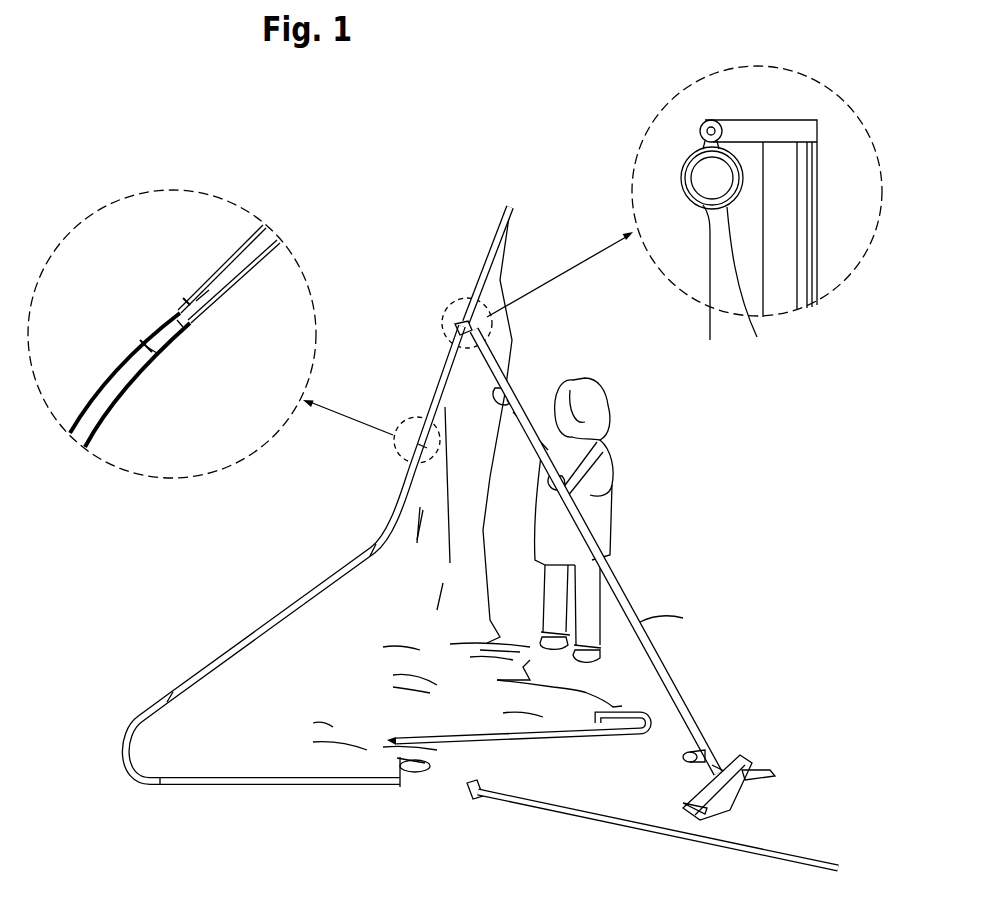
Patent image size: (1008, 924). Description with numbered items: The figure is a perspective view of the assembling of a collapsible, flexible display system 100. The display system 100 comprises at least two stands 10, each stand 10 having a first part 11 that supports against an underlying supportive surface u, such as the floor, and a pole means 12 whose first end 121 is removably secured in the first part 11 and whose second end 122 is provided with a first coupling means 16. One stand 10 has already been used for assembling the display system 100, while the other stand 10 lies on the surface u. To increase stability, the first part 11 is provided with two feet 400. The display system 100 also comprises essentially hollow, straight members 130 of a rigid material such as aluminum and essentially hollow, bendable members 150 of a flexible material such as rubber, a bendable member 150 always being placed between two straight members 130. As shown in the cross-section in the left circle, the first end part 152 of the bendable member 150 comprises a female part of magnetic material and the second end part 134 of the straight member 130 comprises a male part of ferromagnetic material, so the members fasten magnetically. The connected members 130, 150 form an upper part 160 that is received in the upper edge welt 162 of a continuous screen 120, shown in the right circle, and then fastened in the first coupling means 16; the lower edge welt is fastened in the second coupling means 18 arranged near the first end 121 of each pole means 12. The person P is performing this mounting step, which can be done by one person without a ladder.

The collapsible, flexible display system 100 is at (432, 167).
The stand 10 is at (660, 617).
The first part 11 is at (745, 757).
The pole means 12 is at (640, 612).
The first coupling means 16 is at (700, 145).
The second coupling means 18 is at (683, 757).
The first end 121 is at (728, 760).
The second end 122 is at (817, 148).
The continuous screen 120 is at (512, 250).
The straight member 130 is at (243, 283).
The second end part 134 is at (185, 298).
The bendable member 150 is at (108, 420).
The first end part 152 is at (150, 328).
The upper part 160 is at (170, 550).
The upper edge welt 162 is at (700, 207).
The feet 400 is at (760, 785).
The person P is at (613, 442).
The underlying supportive surface u is at (736, 897).